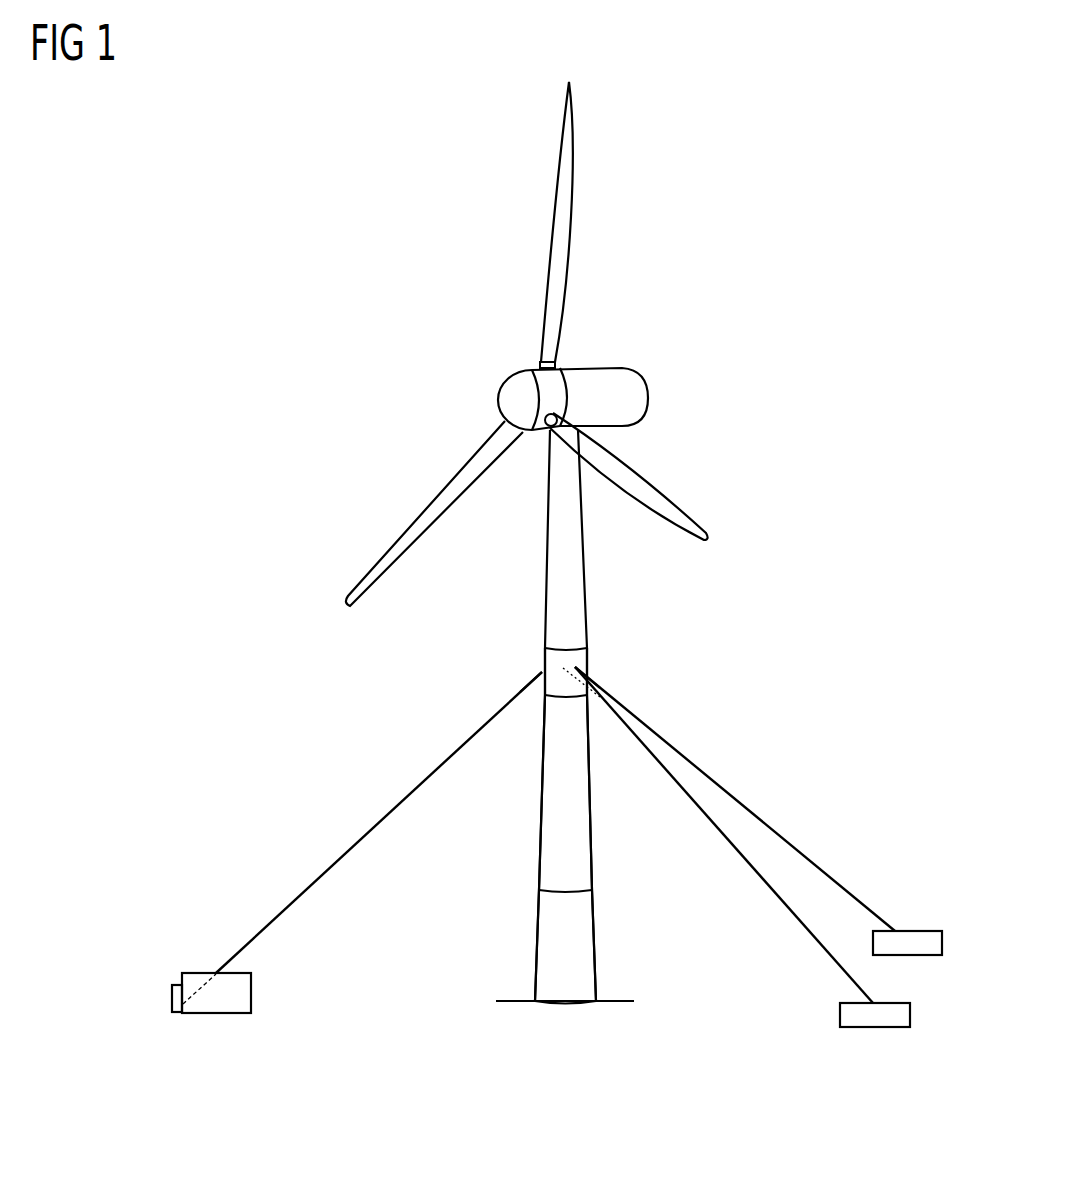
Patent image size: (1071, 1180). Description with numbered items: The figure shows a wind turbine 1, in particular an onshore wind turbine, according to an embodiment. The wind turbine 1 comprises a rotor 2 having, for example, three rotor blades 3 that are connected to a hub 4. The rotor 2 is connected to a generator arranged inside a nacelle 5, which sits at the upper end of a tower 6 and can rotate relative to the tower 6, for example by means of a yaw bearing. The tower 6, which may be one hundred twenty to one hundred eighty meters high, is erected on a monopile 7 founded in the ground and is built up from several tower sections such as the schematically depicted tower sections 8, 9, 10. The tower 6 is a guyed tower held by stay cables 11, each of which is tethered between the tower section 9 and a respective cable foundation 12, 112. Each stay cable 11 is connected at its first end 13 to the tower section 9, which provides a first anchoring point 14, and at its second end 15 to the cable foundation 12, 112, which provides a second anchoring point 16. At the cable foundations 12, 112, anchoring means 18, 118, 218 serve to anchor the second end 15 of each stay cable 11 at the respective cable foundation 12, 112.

The wind turbine 1 is at (703, 238).
The rotor 2 is at (468, 328).
The rotor blades 3 is at (565, 203).
The hub 4 is at (512, 400).
The nacelle 5 is at (635, 395).
The tower 6 is at (593, 717).
The monopile 7 is at (593, 932).
The tower section 8 is at (593, 808).
The tower section 9 is at (588, 657).
The tower section 10 is at (585, 578).
The stay cables 11 is at (340, 862).
The cable foundation 12 is at (251, 1000).
The cable foundation 112 is at (562, 979).
The first end 13 is at (540, 672).
The first anchoring point 14 is at (560, 682).
The second end 15 is at (173, 1005).
The second anchoring point 16 is at (177, 998).
The anchoring means 18 is at (177, 987).
The anchoring means 118 is at (199, 989).
The anchoring means 218 is at (199, 989).